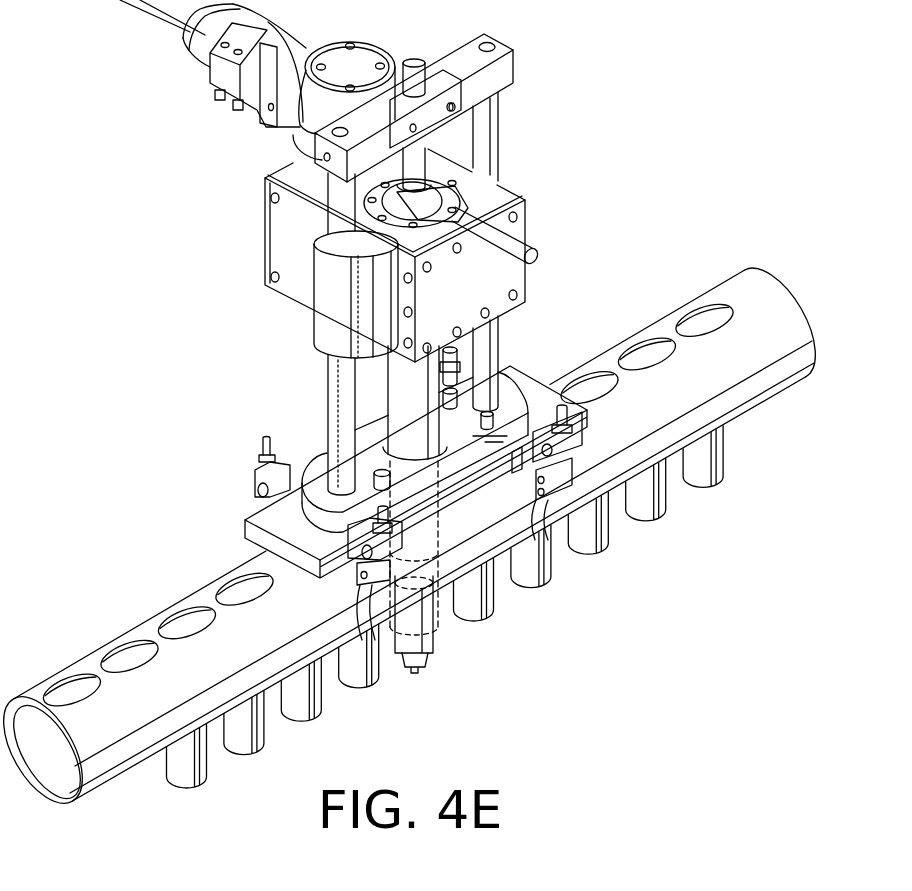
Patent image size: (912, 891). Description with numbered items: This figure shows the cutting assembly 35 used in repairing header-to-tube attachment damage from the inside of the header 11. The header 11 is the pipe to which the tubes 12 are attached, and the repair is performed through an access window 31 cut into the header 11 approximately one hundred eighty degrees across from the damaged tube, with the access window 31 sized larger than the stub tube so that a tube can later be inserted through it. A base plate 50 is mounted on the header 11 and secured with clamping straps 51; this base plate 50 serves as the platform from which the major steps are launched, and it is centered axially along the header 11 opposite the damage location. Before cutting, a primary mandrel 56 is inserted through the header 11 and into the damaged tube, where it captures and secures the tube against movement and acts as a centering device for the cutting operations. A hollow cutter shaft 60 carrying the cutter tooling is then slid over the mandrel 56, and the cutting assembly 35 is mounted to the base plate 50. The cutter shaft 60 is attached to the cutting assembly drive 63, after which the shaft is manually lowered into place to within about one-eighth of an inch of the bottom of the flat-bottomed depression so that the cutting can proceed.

The header 11 is at (775, 300).
The discharge tubes 12 is at (661, 510).
The access window 31 is at (710, 310).
The cutting assembly 35 is at (611, 78).
The base plate 50 is at (245, 522).
The clamping strap 51 is at (258, 462).
The primary mandrel 56 is at (434, 652).
The cutter shaft 60 is at (410, 397).
The cutting assembly drive 63 is at (542, 202).